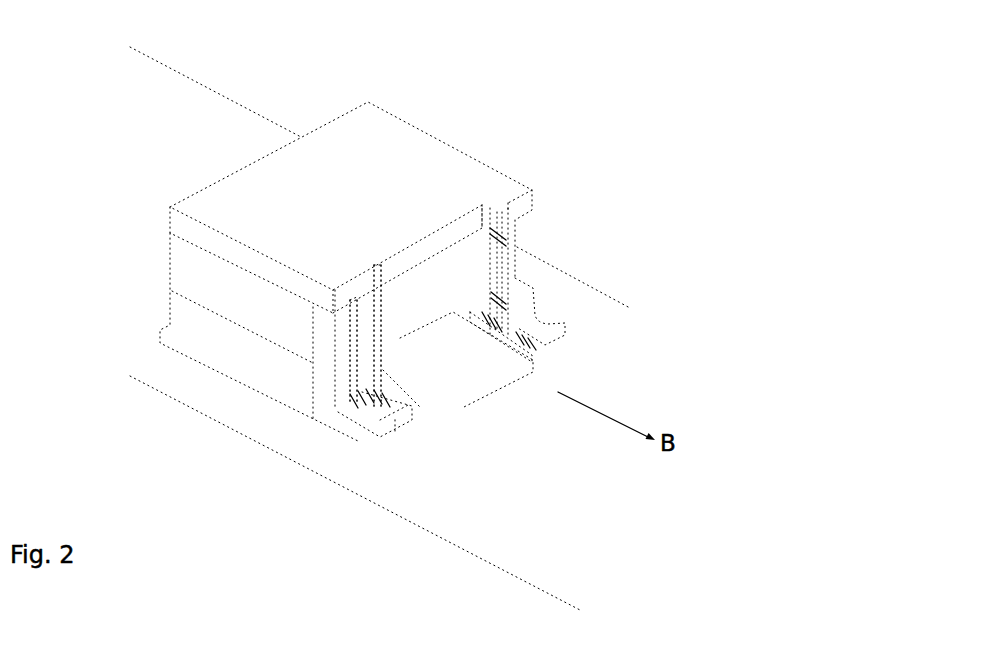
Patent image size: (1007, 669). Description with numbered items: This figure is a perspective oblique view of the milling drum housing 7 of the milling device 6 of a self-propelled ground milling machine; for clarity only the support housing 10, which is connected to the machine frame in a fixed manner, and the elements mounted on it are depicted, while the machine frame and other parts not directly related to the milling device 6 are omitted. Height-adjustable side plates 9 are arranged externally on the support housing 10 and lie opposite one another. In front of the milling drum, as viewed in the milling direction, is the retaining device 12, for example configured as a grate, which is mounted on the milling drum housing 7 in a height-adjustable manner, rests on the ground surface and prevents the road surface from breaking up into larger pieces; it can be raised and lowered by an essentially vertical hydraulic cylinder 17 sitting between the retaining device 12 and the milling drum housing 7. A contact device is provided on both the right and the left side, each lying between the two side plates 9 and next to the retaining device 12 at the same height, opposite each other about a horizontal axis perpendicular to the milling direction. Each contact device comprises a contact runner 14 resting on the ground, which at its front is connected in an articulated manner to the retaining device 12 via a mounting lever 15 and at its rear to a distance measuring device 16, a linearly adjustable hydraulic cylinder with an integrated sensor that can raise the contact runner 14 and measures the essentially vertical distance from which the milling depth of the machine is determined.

The milling device 6 is at (489, 124).
The milling drum housing 7 is at (262, 194).
The side plates 9 is at (525, 277).
The support housing 10 is at (503, 185).
The retaining device 12 is at (445, 360).
The contact runner 14 is at (408, 398).
The mounting lever 15 is at (384, 405).
The distance measuring device 16 is at (375, 338).
The hydraulic cylinder 17 is at (352, 337).